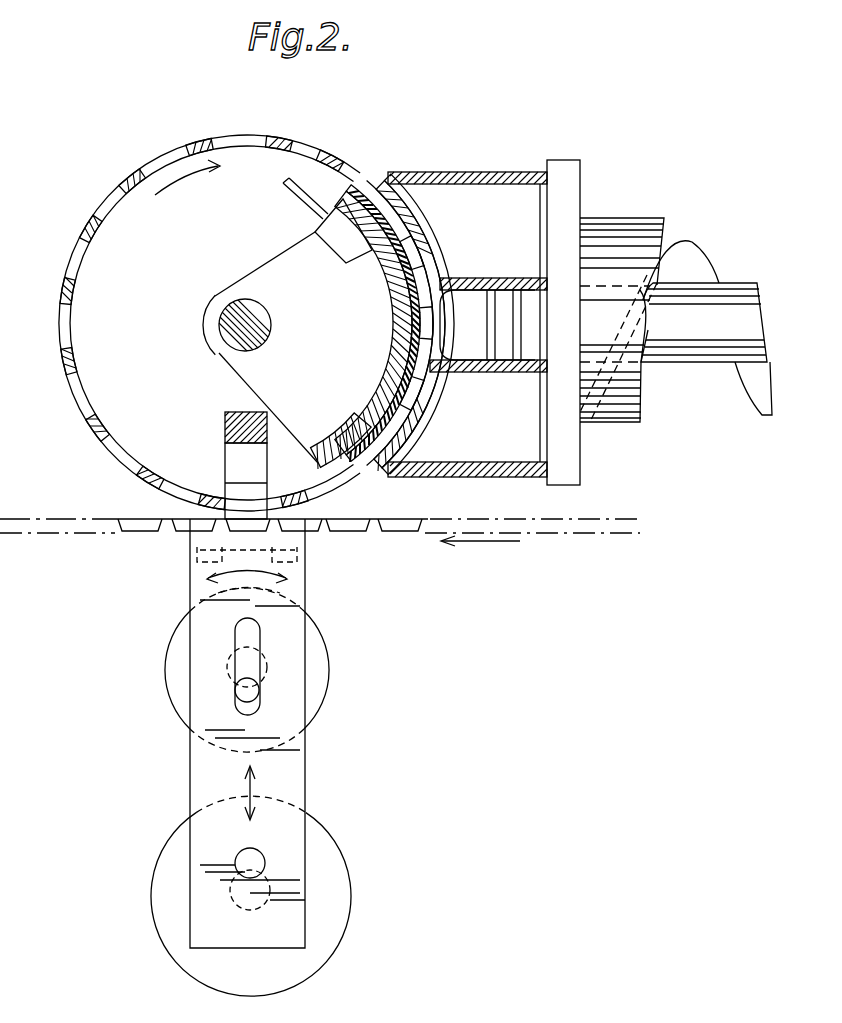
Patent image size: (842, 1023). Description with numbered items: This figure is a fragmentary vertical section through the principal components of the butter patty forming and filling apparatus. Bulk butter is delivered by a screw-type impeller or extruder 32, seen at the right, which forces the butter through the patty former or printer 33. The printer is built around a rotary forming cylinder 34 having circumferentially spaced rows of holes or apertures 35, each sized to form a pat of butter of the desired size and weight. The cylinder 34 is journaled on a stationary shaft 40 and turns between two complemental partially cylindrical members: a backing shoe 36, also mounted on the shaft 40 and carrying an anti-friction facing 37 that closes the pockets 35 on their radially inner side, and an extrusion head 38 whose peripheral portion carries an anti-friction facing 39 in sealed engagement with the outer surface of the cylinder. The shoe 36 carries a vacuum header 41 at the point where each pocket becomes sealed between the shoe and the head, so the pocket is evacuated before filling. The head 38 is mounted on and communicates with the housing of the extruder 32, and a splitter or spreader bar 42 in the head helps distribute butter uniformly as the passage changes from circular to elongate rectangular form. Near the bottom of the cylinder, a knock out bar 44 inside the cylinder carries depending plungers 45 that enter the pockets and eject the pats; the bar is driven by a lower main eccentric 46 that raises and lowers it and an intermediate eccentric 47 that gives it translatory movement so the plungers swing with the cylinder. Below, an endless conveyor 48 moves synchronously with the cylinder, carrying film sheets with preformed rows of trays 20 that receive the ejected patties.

The tray 20 is at (348, 531).
The impeller or extruder 32 is at (695, 254).
The patty former or printer 33 is at (411, 127).
The rotary cylinder 34 is at (97, 224).
The holes or apertures 35 is at (168, 156).
The backing shoe 36 is at (393, 356).
The anti-friction facing 37 is at (382, 422).
The extrusion head 38 is at (412, 206).
The anti-friction facing 39 is at (428, 237).
The stationary shaft 40 is at (213, 338).
The vacuum header 41 is at (340, 244).
The splitter or spreader bar 42 is at (497, 350).
The knock out bar 44 is at (226, 415).
The plungers 45 is at (237, 461).
The lower main eccentric 46 is at (330, 851).
The intermediate eccentric 47 is at (318, 668).
The endless conveyor 48 is at (540, 528).